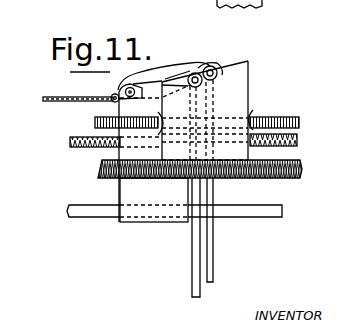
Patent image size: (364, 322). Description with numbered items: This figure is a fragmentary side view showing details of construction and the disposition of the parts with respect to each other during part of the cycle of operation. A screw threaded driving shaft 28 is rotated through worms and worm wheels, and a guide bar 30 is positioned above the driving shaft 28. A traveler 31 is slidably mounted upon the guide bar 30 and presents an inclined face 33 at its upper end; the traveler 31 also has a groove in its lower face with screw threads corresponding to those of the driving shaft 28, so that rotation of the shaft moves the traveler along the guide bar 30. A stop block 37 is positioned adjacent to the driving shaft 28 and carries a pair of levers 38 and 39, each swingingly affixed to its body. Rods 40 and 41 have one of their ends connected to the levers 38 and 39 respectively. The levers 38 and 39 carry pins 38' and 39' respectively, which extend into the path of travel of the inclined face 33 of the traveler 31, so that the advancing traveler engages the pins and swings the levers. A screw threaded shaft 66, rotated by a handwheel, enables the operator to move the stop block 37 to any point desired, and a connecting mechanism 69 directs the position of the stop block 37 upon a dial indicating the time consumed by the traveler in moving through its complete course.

The connecting mechanism 69 is at (52, 97).
The lever 39 is at (149, 68).
The lever 38 is at (164, 62).
The pin 39' is at (194, 51).
The pin 38' is at (226, 51).
The inclined face 33 is at (232, 78).
The traveler 31 is at (240, 97).
The guide bar 30 is at (278, 118).
The screw threaded shaft 66 is at (298, 142).
The screw threaded driving shaft 28 is at (290, 175).
The stop block 37 is at (140, 192).
The rod 41 is at (193, 252).
The rod 40 is at (213, 242).